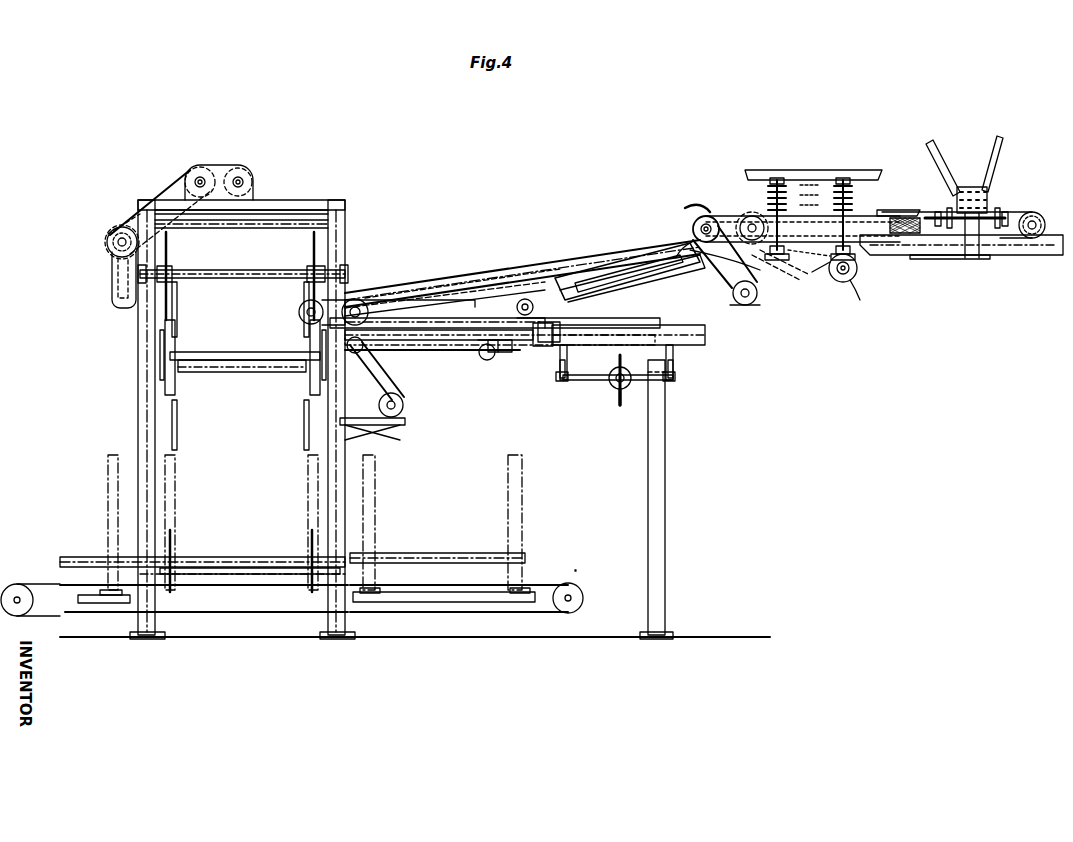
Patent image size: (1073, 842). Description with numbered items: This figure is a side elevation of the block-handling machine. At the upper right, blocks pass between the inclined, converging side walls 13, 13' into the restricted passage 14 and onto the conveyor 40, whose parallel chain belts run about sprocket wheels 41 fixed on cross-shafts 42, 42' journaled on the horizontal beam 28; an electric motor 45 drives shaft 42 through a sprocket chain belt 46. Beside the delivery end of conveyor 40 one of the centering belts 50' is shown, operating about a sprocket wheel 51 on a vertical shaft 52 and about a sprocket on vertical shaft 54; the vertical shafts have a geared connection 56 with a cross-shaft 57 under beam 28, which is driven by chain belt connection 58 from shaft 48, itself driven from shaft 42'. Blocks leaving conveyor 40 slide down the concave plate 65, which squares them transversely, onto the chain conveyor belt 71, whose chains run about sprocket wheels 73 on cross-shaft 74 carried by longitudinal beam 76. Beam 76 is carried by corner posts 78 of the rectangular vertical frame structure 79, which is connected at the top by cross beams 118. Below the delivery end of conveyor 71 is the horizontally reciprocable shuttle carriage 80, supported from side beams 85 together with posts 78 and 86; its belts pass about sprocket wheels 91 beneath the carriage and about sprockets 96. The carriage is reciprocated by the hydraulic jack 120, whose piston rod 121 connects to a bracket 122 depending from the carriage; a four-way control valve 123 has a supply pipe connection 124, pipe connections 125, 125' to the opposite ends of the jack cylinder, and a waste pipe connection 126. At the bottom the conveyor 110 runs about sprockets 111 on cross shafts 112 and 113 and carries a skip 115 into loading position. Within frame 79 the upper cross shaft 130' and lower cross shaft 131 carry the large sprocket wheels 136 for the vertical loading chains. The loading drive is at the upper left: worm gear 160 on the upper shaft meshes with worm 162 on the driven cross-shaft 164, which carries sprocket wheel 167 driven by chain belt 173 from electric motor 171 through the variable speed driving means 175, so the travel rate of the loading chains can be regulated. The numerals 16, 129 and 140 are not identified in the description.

The side wall 13 is at (1014, 156).
The side wall 13' is at (930, 155).
The restricted passage 14 is at (972, 186).
The shaft 16 is at (988, 190).
The horizontal beam 28 is at (914, 254).
The conveyor 40 is at (878, 210).
The sprocket wheel 41 is at (700, 216).
The cross-shaft 42 is at (1045, 215).
The cross-shaft 42' is at (725, 225).
The electric motor 45 is at (776, 280).
The sprocket chain belt 46 is at (742, 262).
The shaft 48 is at (752, 212).
The centering belt 50' is at (834, 161).
The sprocket wheel 51 is at (814, 276).
The vertical shaft 52 is at (848, 214).
The vertical shaft 54 is at (780, 200).
The geared connection 56 is at (856, 276).
The cross-shaft 57 is at (850, 282).
The chain belt connection 58 is at (816, 270).
The concave plate 65 is at (680, 214).
The chain conveyor belt 71 is at (502, 268).
The sprocket wheel 73 is at (680, 258).
The cross-shaft 74 is at (736, 300).
The longitudinal beam 76 is at (626, 262).
The corner post 78 is at (348, 505).
The vertical frame structure 79 is at (138, 372).
The shuttle carriage 80 is at (542, 300).
The side beam 85 is at (705, 340).
The post 86 is at (668, 484).
The sprocket wheel 91 is at (475, 350).
The sprocket 96 is at (488, 365).
The conveyor 110 is at (222, 600).
The sprocket 111 is at (30, 580).
The cross shaft 112 is at (582, 592).
The cross shaft 113 is at (26, 618).
The skip 115 is at (526, 510).
The cross beam 118 is at (230, 222).
The hydraulic jack 120 is at (672, 350).
The piston rod 121 is at (542, 345).
The bracket 122 is at (520, 330).
The four-way control valve 123 is at (628, 386).
The pipe connection 124 is at (624, 404).
The pipe connection 125 is at (711, 388).
The pipe connection 125' is at (588, 411).
The waste pipe connection 126 is at (612, 370).
The top beam 129 is at (290, 200).
The cross shaft 130' is at (243, 288).
The cross shaft 131 is at (264, 560).
The sprocket wheel 136 is at (170, 246).
The roller 140 is at (240, 378).
The worm gear 160 is at (110, 276).
The worm 162 is at (104, 235).
The cross-shaft 164 is at (106, 244).
The sprocket wheel 167 is at (106, 232).
The electric motor 171 is at (243, 170).
The chain belt 173 is at (168, 190).
The variable speed driving means 175 is at (204, 172).